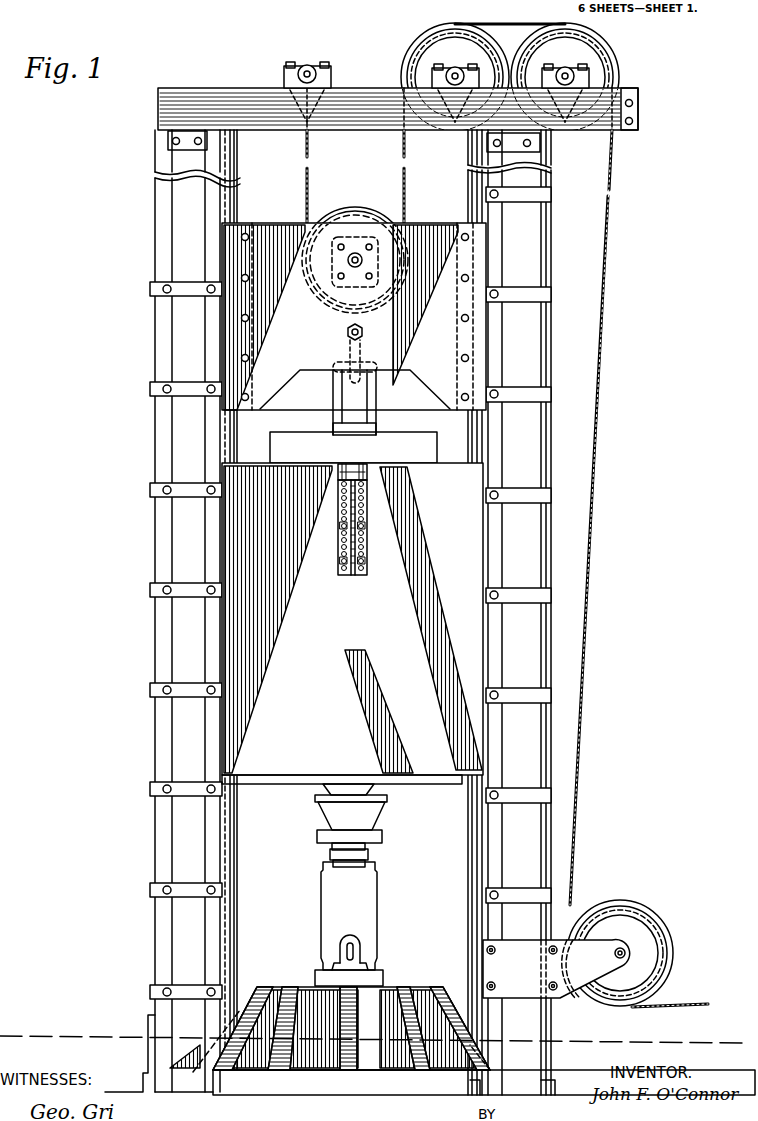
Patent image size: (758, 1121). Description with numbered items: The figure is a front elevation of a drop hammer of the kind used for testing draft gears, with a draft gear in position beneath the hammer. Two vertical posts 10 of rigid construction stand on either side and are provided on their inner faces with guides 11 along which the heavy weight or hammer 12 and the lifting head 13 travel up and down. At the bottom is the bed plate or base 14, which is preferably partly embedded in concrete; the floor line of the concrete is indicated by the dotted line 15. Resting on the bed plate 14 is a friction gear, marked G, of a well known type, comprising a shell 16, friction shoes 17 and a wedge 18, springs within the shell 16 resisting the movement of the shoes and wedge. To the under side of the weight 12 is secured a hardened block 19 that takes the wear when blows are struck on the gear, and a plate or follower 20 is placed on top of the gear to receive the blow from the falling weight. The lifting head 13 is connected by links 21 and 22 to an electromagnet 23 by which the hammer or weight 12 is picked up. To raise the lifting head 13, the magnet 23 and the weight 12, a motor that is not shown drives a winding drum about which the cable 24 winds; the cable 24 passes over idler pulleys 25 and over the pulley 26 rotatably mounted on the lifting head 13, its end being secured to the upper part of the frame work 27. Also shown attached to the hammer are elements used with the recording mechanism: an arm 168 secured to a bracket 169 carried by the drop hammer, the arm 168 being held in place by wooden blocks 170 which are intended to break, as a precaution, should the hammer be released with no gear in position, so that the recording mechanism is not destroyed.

The vertical posts 10 is at (206, 846).
The guides 11 is at (238, 172).
The weight or hammer 12 is at (352, 623).
The lifting head 13 is at (425, 224).
The bed plate or base 14 is at (405, 985).
The floor line 15 is at (688, 1043).
The shell 16 is at (377, 915).
The friction shoes 17 is at (370, 855).
The wedge 18 is at (330, 847).
The hardened block 19 is at (314, 804).
The plate or follower 20 is at (383, 837).
The link 21 is at (355, 385).
The link 22 is at (376, 396).
The electromagnet 23 is at (288, 434).
The cable 24 is at (400, 154).
The idler pulleys 25 is at (518, 52).
The pulley 26 is at (354, 207).
The frame work 27 is at (284, 78).
The arm 168 is at (364, 493).
The bracket 169 is at (364, 507).
The wooden blocks 170 is at (364, 474).